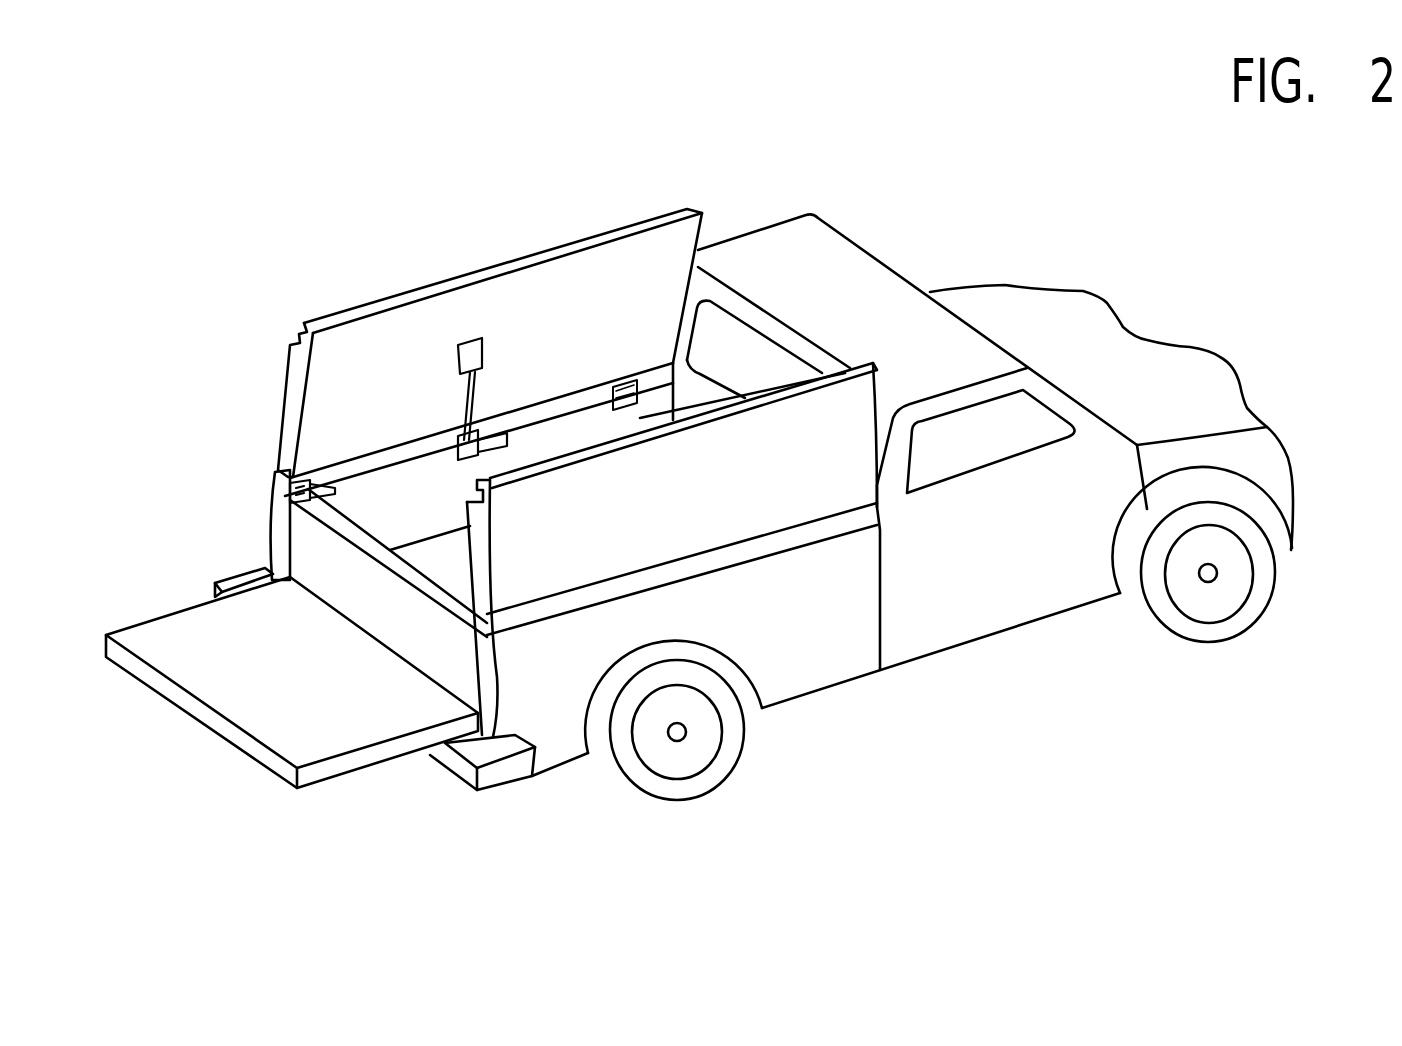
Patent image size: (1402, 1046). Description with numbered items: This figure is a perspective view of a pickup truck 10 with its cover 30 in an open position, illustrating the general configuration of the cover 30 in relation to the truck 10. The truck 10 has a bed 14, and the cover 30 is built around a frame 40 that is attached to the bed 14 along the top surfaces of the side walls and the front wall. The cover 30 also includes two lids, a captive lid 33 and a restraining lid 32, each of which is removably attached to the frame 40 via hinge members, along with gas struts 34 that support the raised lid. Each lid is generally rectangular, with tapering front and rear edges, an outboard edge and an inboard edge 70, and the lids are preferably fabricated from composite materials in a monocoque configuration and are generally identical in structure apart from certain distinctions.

The pickup truck 10 is at (820, 108).
The bed 14 is at (343, 587).
The cover 30 is at (561, 220).
The restraining lid 32 is at (733, 477).
The captive lid 33 is at (293, 383).
The gas struts 34 is at (463, 400).
The frame 40 is at (440, 598).
The inboard edge 70 is at (290, 502).